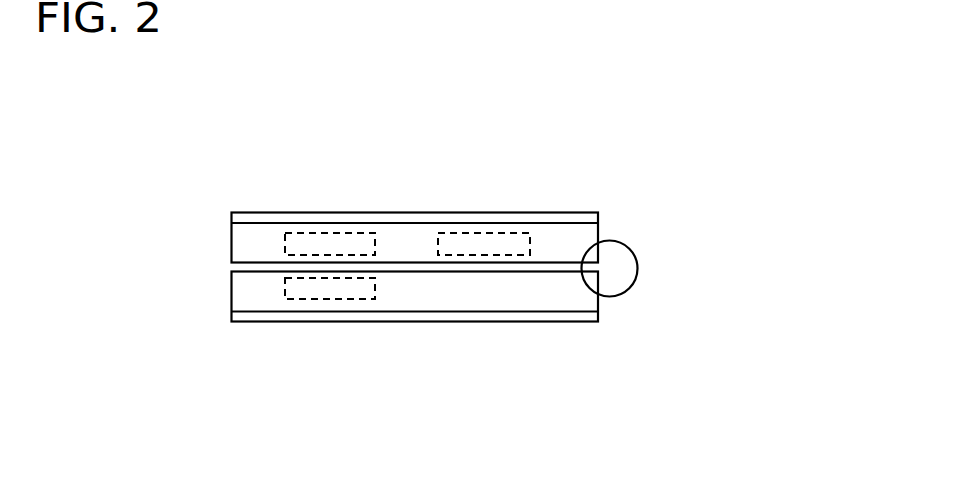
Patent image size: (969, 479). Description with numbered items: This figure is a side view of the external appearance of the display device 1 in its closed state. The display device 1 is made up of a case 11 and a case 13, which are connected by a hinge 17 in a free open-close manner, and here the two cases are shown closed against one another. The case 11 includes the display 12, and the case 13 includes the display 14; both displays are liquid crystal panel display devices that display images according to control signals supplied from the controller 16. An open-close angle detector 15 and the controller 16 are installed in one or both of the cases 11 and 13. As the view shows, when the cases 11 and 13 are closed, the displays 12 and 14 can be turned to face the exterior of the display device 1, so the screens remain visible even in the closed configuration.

The display device 1 is at (418, 285).
The case 11 is at (371, 197).
The display 12 is at (362, 213).
The case 13 is at (371, 336).
The display 14 is at (370, 322).
The open-close angle detector 15 is at (285, 247).
The controller 16 is at (498, 233).
The hinge 17 is at (628, 282).